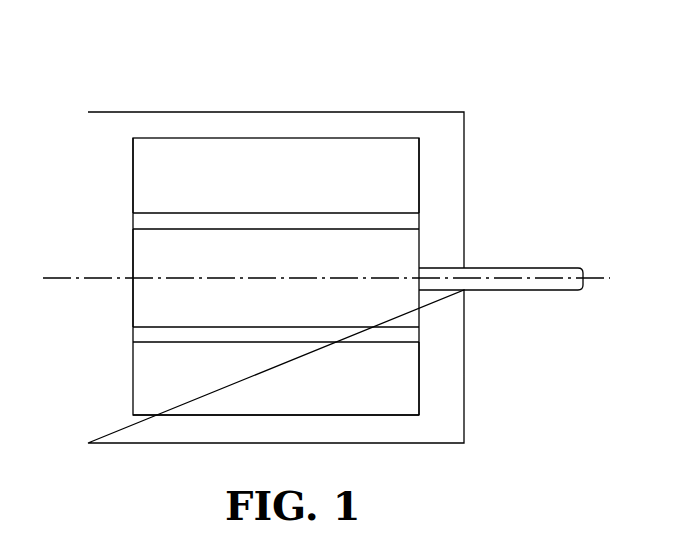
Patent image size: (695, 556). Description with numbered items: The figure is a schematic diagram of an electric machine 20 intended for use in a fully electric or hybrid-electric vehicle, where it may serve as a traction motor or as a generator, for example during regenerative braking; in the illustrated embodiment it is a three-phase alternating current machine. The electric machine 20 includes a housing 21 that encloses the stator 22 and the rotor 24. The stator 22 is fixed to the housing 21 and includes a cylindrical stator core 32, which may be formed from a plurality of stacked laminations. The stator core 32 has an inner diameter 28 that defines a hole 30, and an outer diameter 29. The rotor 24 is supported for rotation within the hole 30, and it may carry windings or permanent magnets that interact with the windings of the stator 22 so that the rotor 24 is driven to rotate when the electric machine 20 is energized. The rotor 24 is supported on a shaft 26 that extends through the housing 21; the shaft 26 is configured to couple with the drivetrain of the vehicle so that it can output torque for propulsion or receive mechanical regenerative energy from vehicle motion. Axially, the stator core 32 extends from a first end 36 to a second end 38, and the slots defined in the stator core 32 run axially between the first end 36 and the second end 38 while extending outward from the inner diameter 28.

The electric machine 20 is at (457, 62).
The housing 21 is at (277, 112).
The stator 22 is at (183, 137).
The rotor 24 is at (130, 257).
The shaft 26 is at (517, 267).
The inner diameter 28 is at (392, 213).
The outer diameter 29 is at (190, 417).
The hole 30 is at (432, 330).
The stator core 32 is at (420, 177).
The first end 36 is at (130, 182).
The second end 38 is at (422, 375).